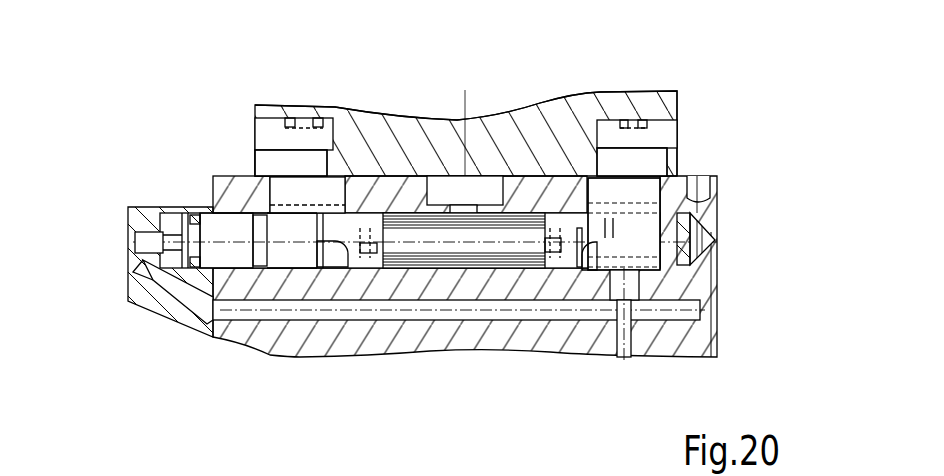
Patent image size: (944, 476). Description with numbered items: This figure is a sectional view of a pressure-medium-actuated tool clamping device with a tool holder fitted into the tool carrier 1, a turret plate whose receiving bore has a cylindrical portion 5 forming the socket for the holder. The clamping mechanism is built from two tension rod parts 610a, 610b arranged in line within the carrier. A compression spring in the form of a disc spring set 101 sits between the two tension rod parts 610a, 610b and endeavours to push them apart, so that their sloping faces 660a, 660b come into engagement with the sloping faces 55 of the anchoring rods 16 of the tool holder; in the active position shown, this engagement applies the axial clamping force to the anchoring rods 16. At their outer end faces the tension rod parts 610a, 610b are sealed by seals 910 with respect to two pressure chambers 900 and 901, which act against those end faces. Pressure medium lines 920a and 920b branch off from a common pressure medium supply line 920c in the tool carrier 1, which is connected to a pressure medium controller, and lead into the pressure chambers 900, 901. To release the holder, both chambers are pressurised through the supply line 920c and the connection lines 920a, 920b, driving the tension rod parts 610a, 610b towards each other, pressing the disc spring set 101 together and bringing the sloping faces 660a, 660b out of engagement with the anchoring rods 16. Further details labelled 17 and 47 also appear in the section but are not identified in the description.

The tool carrier 1 is at (687, 354).
The cylindrical portion 5 is at (680, 97).
The anchoring rods 16 is at (252, 160).
The pin 17 is at (481, 190).
The piston rod 47 is at (300, 225).
The sloping face 55 is at (330, 248).
The disc spring set 101 is at (438, 270).
The tension rod part 610a is at (224, 262).
The tension rod part 610b is at (670, 231).
The sloping face 660a is at (345, 215).
The sloping face 660b is at (590, 205).
The pressure chamber 900 is at (172, 223).
The pressure chamber 901 is at (692, 215).
The seals 910 is at (197, 213).
The pressure medium line 920a is at (127, 302).
The pressure medium line 920b is at (700, 312).
The pressure medium supply line 920c is at (623, 322).